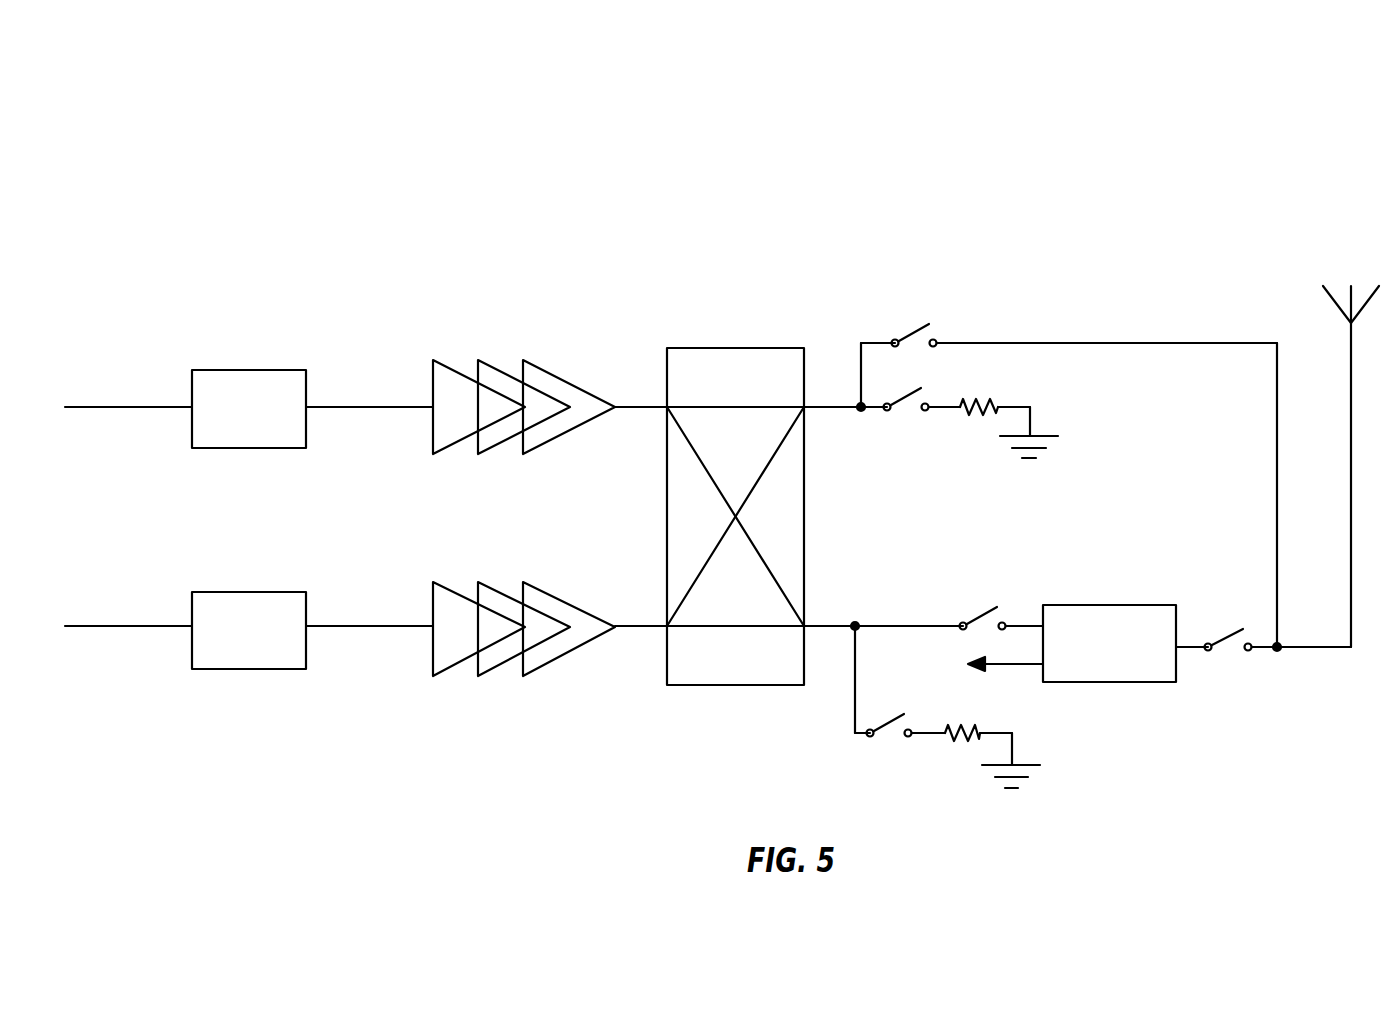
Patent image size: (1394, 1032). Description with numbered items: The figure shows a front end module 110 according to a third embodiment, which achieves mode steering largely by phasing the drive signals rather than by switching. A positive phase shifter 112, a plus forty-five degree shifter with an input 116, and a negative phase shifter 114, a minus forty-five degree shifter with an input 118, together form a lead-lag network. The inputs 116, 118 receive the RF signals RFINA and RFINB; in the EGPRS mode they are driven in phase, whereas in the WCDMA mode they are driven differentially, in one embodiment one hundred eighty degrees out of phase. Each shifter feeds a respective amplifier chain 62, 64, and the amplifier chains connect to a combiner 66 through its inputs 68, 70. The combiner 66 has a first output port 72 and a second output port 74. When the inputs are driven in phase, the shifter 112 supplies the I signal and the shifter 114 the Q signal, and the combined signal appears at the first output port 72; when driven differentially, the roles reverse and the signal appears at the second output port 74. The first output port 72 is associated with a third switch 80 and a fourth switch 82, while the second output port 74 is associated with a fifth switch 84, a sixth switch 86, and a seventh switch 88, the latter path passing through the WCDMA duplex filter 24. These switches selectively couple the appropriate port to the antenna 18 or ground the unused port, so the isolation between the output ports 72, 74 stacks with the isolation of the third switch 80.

The front end module 110 is at (887, 203).
The antenna 18 is at (1360, 263).
The input 116 is at (192, 407).
The positive phase shifter 112 is at (237, 370).
The input 118 is at (192, 626).
The negative phase shifter 114 is at (237, 592).
The amplifier chain 62 is at (548, 370).
The amplifier chain 64 is at (548, 662).
The combiner 66 is at (736, 348).
The input 68 is at (667, 407).
The input 70 is at (667, 626).
The first output port 72 is at (804, 407).
The second output port 74 is at (804, 626).
The third switch 80 is at (917, 330).
The fourth switch 82 is at (896, 405).
The fifth switch 84 is at (981, 613).
The sixth switch 86 is at (880, 733).
The seventh switch 88 is at (1232, 633).
The WCDMA duplex filter 24 is at (1118, 682).